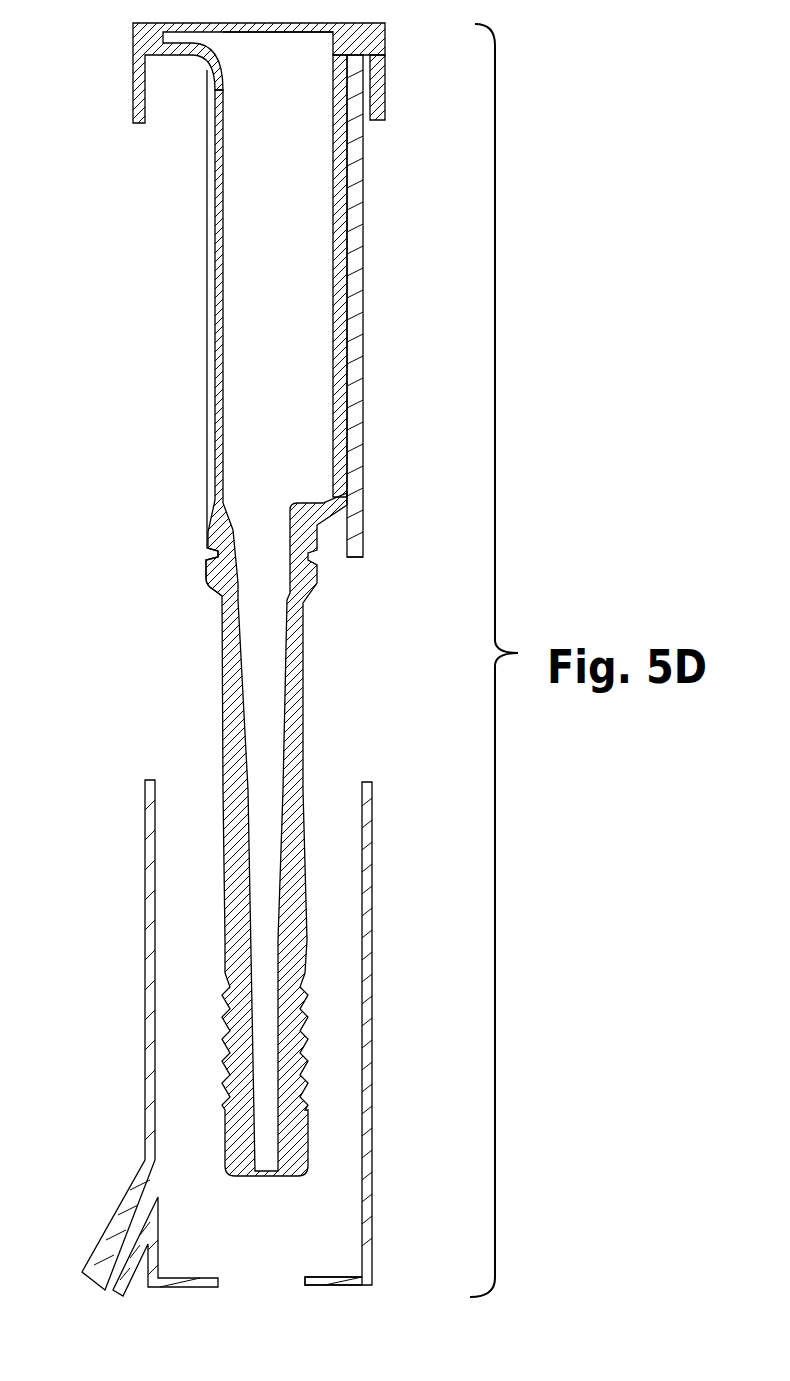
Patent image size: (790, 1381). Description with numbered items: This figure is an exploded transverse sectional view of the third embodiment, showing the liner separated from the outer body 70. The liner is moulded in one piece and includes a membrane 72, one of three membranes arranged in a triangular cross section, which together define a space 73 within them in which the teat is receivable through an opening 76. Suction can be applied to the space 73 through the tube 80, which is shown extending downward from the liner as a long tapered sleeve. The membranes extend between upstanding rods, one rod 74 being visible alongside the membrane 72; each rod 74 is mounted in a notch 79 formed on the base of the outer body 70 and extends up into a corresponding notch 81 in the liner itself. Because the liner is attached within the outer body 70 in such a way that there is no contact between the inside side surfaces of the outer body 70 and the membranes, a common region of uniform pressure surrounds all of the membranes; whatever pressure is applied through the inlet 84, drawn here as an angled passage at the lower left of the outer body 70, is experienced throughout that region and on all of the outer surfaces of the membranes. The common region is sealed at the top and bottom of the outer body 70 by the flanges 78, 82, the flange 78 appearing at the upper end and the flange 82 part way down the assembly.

The outer body 70 is at (375, 1037).
The membrane 72 is at (366, 398).
The space 73 is at (322, 312).
The upstanding rod 74 is at (366, 532).
The opening 76 is at (278, 33).
The flange 78 is at (380, 88).
The notch 79 is at (353, 1275).
The tube 80 is at (300, 750).
The notch 81 is at (383, 37).
The flange 82 is at (217, 583).
The inlet 84 is at (113, 1253).